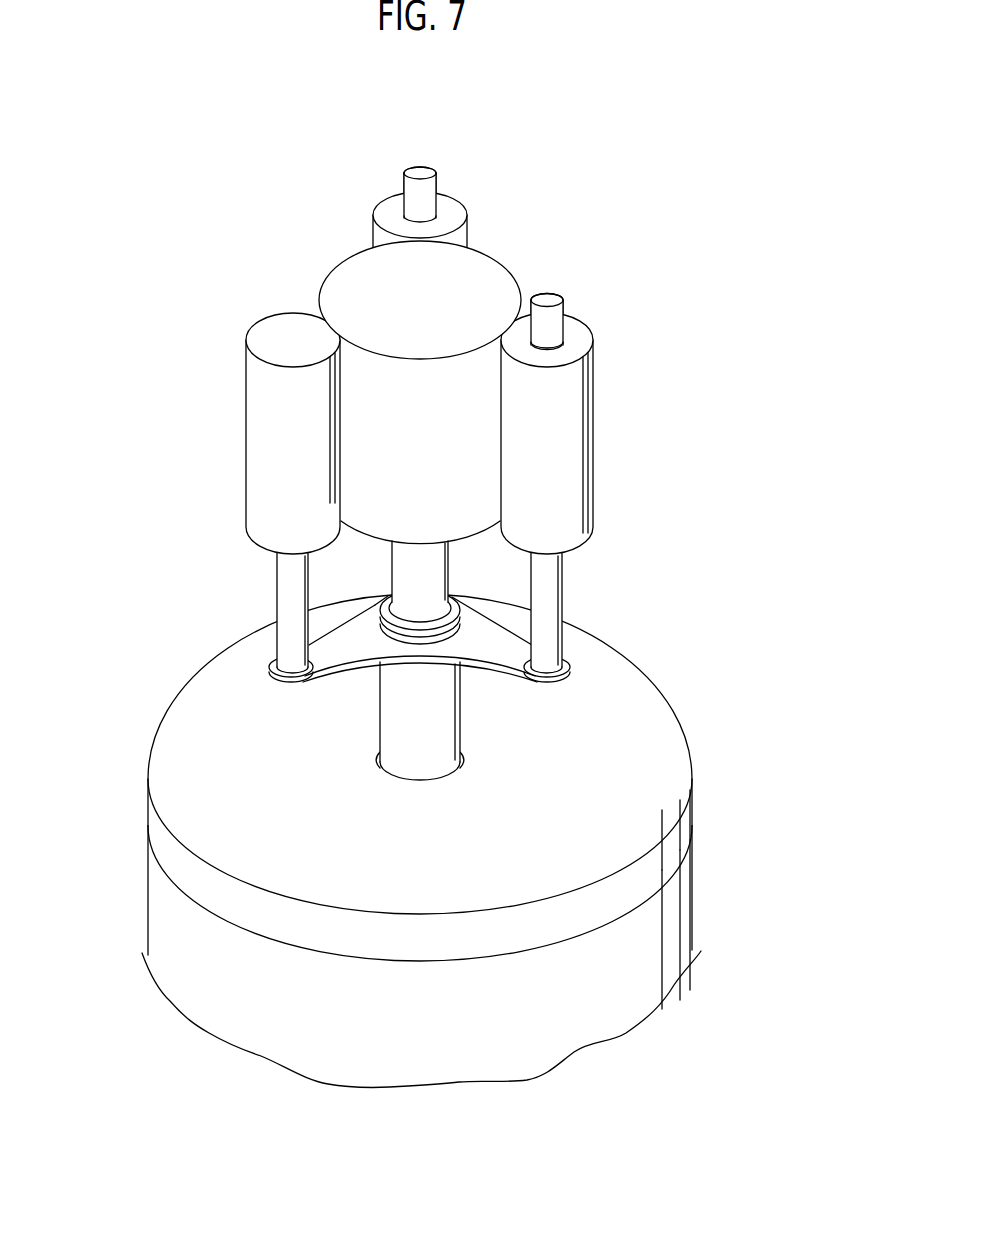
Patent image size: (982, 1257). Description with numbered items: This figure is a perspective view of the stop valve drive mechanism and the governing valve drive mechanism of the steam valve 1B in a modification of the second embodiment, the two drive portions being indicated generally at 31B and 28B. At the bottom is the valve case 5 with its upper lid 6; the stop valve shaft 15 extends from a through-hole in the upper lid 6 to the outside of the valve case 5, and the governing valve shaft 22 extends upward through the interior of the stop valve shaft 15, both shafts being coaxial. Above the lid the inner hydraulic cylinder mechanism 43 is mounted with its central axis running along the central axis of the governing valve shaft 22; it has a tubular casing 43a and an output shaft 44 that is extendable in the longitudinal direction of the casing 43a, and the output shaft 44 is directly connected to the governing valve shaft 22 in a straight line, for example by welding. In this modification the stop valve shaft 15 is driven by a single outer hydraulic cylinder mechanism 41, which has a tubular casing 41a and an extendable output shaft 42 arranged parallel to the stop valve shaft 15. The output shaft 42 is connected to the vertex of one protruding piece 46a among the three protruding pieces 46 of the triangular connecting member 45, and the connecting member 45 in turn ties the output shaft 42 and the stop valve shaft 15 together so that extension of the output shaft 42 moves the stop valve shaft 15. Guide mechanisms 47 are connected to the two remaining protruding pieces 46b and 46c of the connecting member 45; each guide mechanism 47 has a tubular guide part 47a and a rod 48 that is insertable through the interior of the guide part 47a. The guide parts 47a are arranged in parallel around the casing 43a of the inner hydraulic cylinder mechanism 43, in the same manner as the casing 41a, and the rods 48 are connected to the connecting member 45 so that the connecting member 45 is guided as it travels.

The steam valve 1B is at (212, 178).
The valve case 5 is at (668, 914).
The upper lid 6 is at (658, 733).
The stop valve shaft 15 is at (397, 718).
The governing valve shaft 22 is at (430, 608).
The holding unit 28B is at (612, 374).
The drive unit 31B is at (508, 248).
The outer hydraulic cylinder mechanism 41 is at (235, 433).
The tubular casing 41a is at (293, 340).
The output shaft 42 is at (292, 592).
The inner hydraulic cylinder mechanism 43 is at (487, 392).
The tubular casing 43a is at (498, 287).
The output shaft 44 is at (430, 572).
The connecting member 45 is at (347, 643).
The protruding pieces 46 is at (440, 608).
The protruding piece 46a is at (277, 667).
The protruding piece 46b is at (570, 673).
The protruding piece 46c is at (390, 588).
The guide mechanism 47 is at (541, 348).
The guide part 47a is at (547, 340).
The rod 48 is at (552, 605).